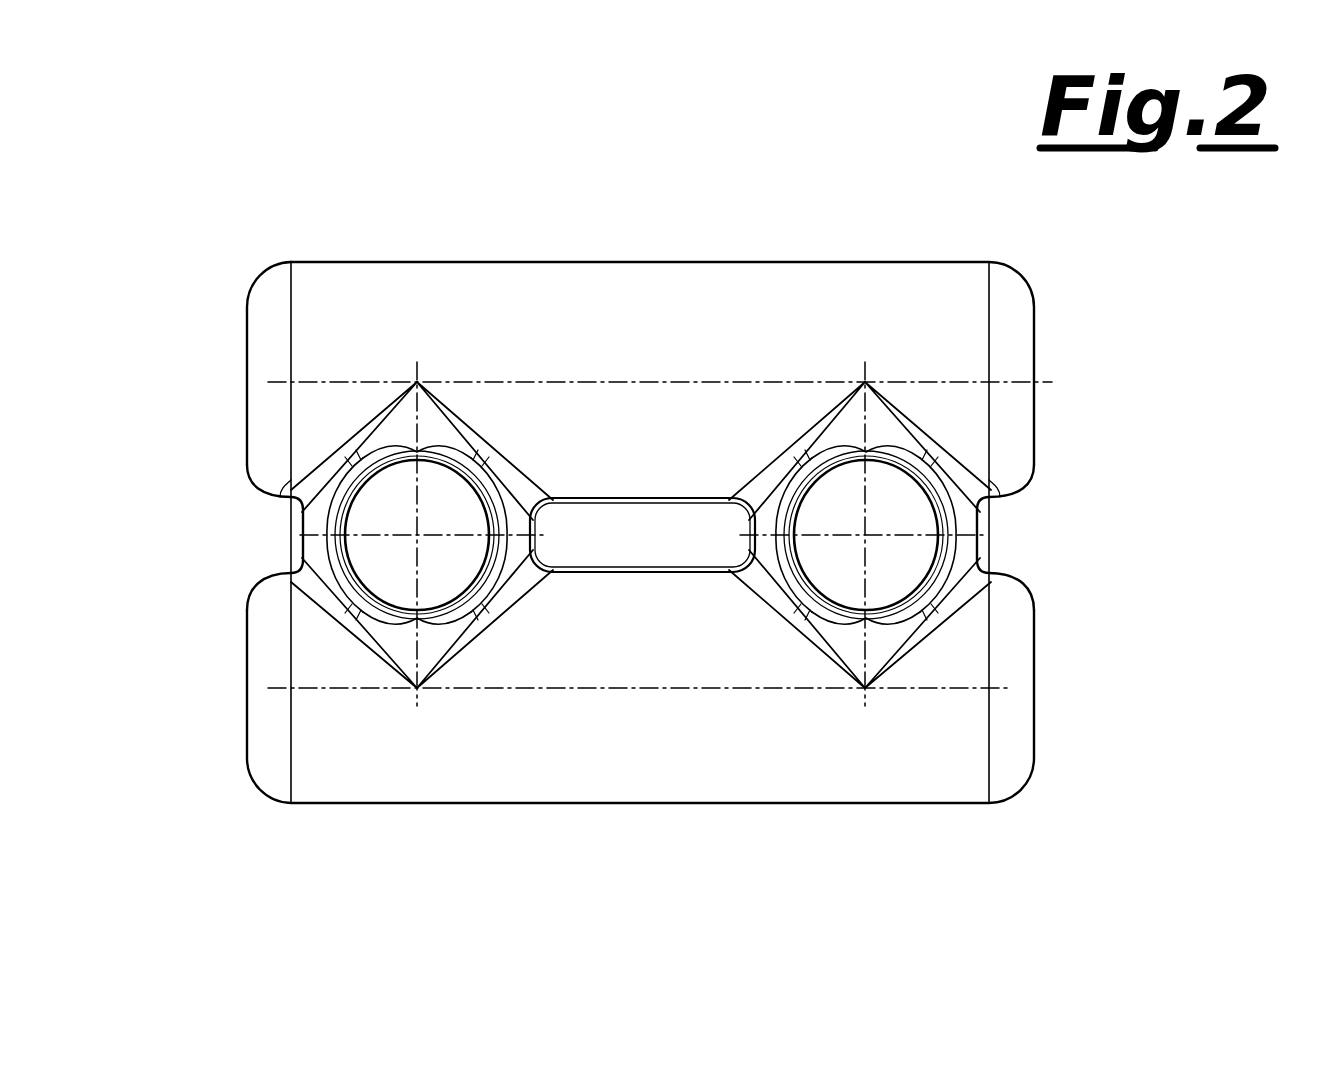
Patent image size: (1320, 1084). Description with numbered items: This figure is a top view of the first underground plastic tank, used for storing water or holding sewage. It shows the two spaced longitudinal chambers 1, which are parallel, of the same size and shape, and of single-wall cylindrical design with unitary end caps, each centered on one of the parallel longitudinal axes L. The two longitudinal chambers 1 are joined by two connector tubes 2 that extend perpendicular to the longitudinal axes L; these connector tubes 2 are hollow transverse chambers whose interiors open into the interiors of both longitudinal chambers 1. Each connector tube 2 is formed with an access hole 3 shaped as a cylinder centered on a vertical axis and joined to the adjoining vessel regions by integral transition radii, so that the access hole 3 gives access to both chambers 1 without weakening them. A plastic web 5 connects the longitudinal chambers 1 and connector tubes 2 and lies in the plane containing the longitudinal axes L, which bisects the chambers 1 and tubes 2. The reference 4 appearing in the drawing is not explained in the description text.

The longitudinal chamber 1 is at (575, 284).
The connector tube 2 is at (300, 538).
The access hole 3 is at (347, 590).
The crossing web / diamond rib 4 is at (417, 692).
The plastic web 5 is at (672, 518).
The longitudinal axis L is at (1058, 378).